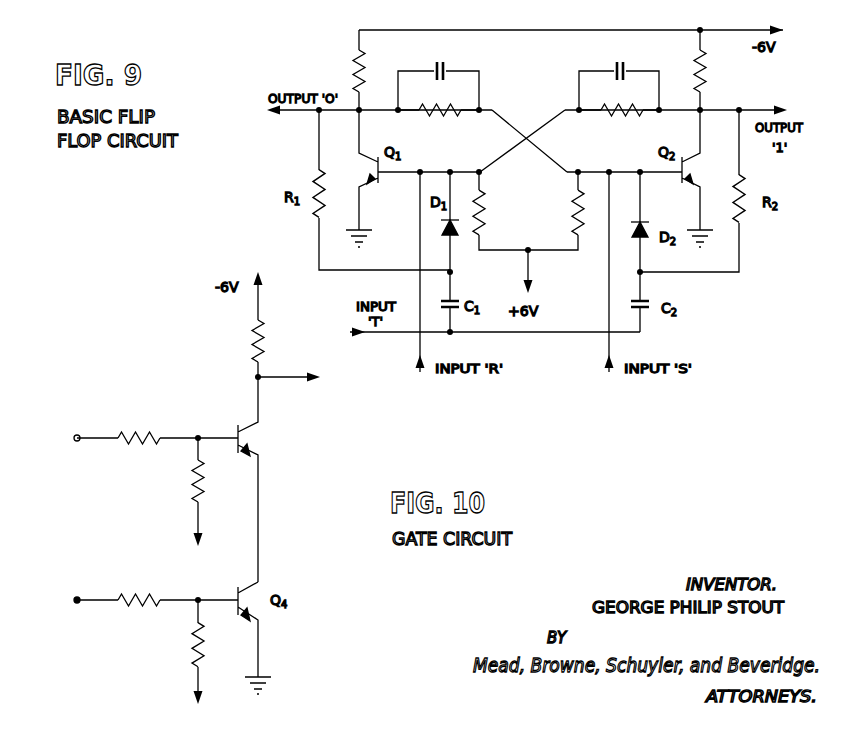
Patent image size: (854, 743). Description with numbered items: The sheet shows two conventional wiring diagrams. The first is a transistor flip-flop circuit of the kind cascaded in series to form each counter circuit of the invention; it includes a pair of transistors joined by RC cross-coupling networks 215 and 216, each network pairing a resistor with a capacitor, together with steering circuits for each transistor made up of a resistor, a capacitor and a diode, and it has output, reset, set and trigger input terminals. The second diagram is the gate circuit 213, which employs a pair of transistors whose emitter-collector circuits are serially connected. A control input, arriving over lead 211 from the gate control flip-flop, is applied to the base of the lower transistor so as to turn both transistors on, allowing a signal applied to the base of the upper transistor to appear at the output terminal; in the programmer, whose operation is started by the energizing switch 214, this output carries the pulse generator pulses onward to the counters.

In FIG. 10, the lead 211 is at (82, 599).
In FIG. 10, the gate 213 is at (177, 414).
In FIG. 10, the energizing switch 214 is at (291, 377).
In FIG. 9, the RC cross-coupling network 215 is at (469, 93).
In FIG. 9, the RC cross-coupling network 216 is at (598, 92).